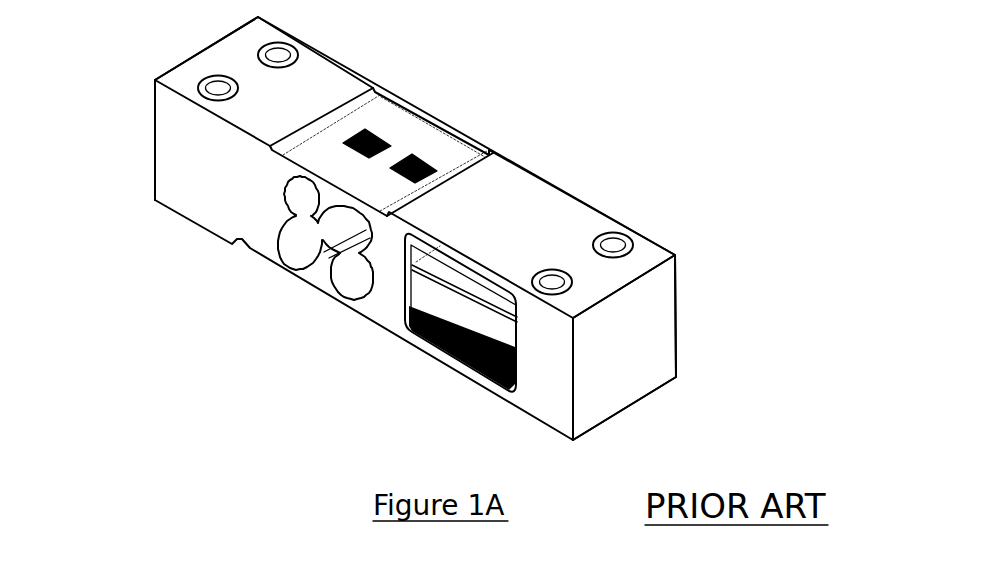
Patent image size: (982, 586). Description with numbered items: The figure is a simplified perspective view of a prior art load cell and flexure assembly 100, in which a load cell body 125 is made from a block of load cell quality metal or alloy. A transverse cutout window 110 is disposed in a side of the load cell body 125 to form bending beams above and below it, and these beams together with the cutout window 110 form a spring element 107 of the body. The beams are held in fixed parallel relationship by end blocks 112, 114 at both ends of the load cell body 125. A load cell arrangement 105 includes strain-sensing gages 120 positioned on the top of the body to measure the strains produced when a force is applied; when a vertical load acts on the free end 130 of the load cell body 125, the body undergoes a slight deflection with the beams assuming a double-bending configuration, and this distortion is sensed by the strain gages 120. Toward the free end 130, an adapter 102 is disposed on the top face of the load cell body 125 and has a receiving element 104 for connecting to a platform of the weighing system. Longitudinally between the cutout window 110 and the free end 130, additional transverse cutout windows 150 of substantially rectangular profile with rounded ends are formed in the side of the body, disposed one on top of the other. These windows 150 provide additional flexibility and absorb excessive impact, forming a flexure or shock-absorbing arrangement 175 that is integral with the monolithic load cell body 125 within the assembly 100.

The load cell and flexure assembly 100 is at (97, 367).
The adapter 102 is at (553, 222).
The receiving element 104 is at (613, 248).
The load cell arrangement 105 is at (290, 463).
The spring element 107 is at (293, 292).
The cutout window 110 is at (320, 238).
The end block 112 is at (212, 195).
The end block 114 is at (392, 297).
The strain-sensing gages 120 is at (423, 163).
The load cell body 125 is at (531, 102).
The free end 130 is at (635, 330).
The cutout window 150 is at (470, 308).
The flexure or shock-absorbing arrangement 175 is at (528, 352).